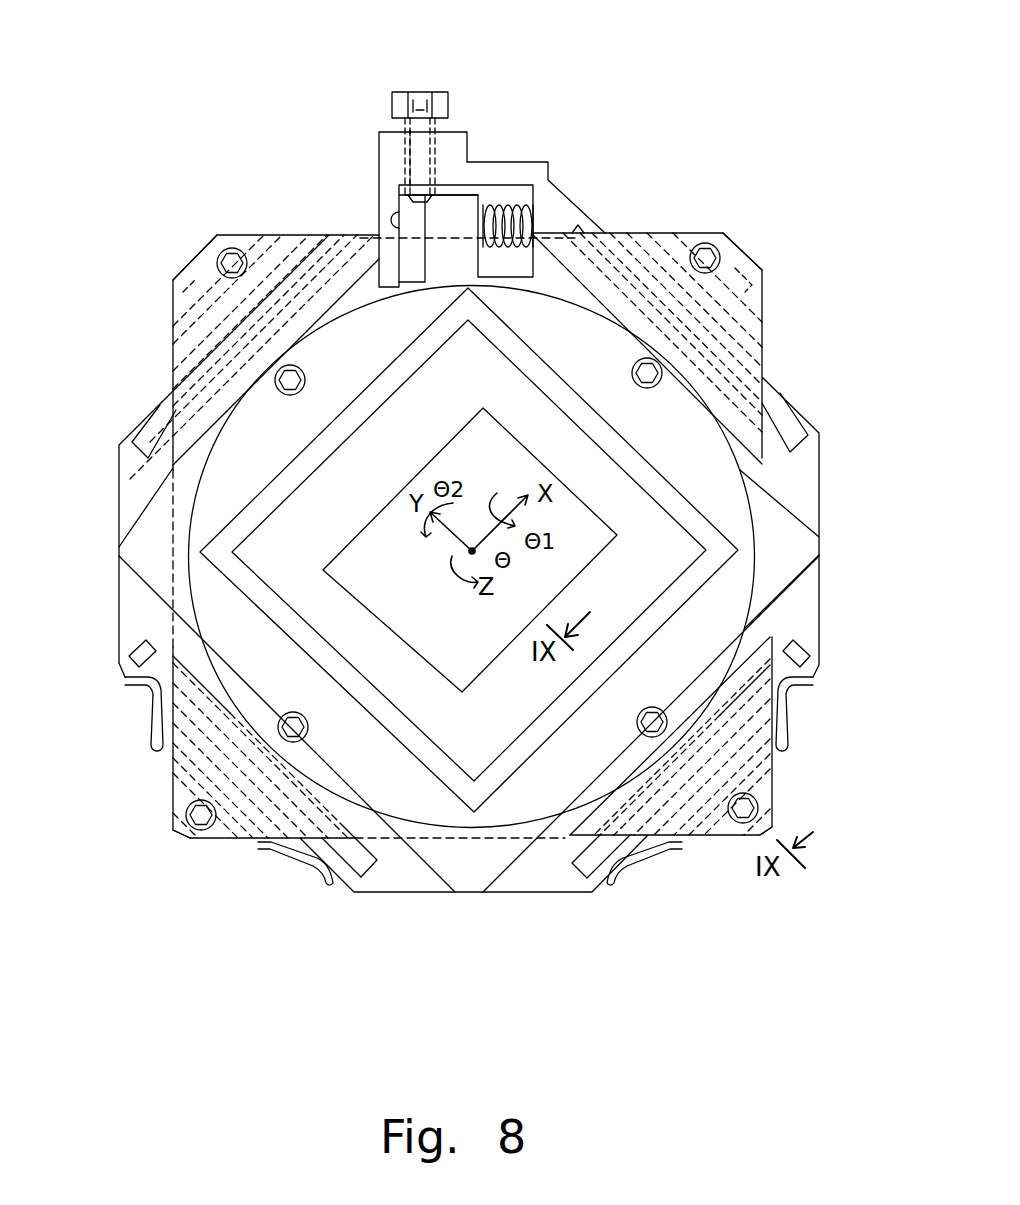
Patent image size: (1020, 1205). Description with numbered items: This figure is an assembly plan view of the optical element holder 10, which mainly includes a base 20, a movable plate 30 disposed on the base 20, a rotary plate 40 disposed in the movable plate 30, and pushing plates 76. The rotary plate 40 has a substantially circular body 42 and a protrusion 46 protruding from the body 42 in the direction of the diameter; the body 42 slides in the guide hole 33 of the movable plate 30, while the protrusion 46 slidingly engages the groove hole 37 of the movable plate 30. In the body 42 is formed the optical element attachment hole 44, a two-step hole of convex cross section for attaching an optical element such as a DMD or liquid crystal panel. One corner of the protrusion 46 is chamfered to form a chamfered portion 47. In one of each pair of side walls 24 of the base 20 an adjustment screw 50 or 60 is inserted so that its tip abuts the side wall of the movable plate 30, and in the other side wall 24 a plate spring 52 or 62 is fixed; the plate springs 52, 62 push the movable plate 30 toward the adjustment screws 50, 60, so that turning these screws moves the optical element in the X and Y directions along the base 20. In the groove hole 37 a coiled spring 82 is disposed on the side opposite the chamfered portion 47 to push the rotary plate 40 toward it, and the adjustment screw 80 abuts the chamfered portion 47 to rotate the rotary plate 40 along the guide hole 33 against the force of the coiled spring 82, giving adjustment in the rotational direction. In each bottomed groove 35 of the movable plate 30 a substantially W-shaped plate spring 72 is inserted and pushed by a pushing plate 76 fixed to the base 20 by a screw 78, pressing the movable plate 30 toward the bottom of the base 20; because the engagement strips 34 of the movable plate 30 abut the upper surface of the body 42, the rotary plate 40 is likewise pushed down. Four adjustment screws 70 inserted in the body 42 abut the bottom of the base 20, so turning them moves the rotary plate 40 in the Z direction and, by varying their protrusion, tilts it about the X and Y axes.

The optical element holder 10 is at (683, 148).
The base 20 is at (150, 505).
The side walls 24 is at (262, 245).
The movable plate 30 is at (379, 150).
The guide hole 33 is at (760, 483).
The engagement strips 34 is at (355, 300).
The bottomed grooves 35 is at (150, 445).
The groove hole 37 is at (399, 220).
The rotary plate 40 is at (578, 230).
The body 42 is at (757, 572).
The optical element attachment hole 44 is at (455, 765).
The protrusion 46 is at (450, 207).
The chamfered portion 47 is at (415, 165).
The adjustment screw 50 is at (755, 255).
The plate spring 52 is at (300, 868).
The adjustment screw 60 is at (183, 292).
The plate spring 62 is at (640, 845).
The adjustment screw 70 is at (292, 395).
The plate spring 72 is at (310, 260).
The pushing plate 76 is at (195, 272).
The screw 78 is at (228, 248).
The adjustment screw 80 is at (430, 92).
The coiled spring 82 is at (510, 207).